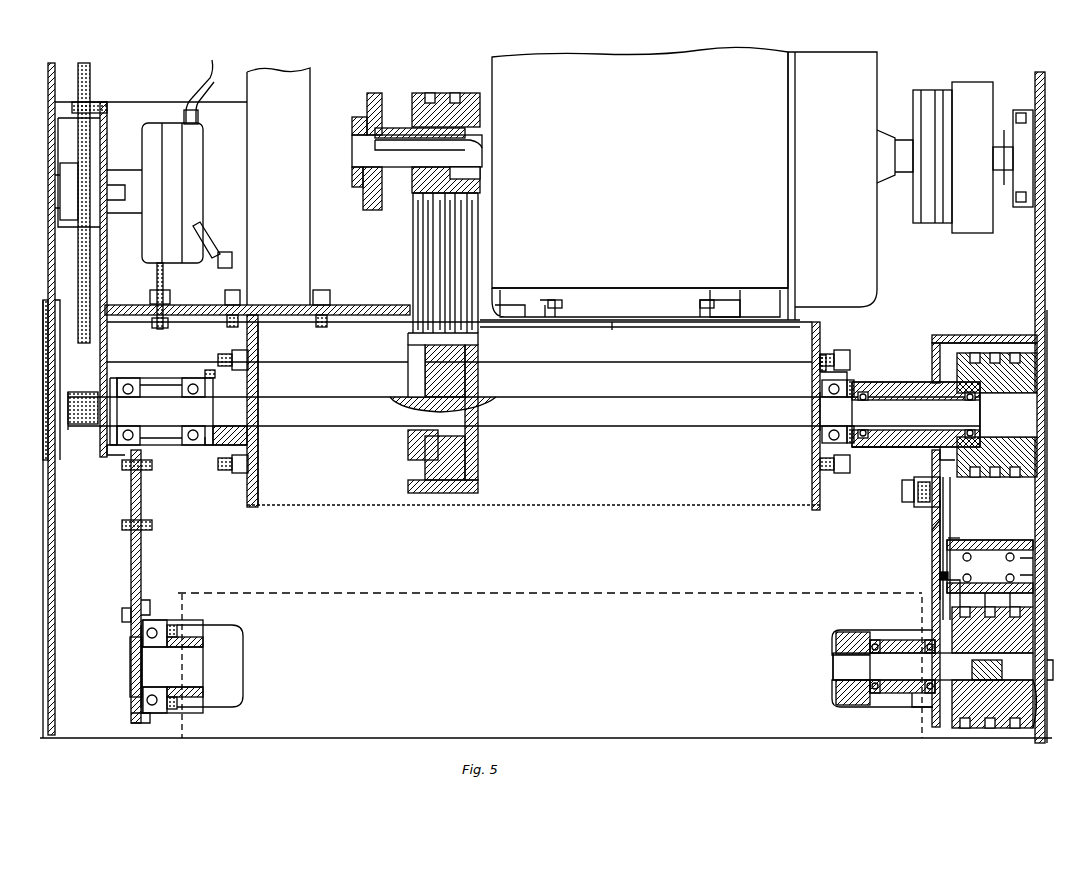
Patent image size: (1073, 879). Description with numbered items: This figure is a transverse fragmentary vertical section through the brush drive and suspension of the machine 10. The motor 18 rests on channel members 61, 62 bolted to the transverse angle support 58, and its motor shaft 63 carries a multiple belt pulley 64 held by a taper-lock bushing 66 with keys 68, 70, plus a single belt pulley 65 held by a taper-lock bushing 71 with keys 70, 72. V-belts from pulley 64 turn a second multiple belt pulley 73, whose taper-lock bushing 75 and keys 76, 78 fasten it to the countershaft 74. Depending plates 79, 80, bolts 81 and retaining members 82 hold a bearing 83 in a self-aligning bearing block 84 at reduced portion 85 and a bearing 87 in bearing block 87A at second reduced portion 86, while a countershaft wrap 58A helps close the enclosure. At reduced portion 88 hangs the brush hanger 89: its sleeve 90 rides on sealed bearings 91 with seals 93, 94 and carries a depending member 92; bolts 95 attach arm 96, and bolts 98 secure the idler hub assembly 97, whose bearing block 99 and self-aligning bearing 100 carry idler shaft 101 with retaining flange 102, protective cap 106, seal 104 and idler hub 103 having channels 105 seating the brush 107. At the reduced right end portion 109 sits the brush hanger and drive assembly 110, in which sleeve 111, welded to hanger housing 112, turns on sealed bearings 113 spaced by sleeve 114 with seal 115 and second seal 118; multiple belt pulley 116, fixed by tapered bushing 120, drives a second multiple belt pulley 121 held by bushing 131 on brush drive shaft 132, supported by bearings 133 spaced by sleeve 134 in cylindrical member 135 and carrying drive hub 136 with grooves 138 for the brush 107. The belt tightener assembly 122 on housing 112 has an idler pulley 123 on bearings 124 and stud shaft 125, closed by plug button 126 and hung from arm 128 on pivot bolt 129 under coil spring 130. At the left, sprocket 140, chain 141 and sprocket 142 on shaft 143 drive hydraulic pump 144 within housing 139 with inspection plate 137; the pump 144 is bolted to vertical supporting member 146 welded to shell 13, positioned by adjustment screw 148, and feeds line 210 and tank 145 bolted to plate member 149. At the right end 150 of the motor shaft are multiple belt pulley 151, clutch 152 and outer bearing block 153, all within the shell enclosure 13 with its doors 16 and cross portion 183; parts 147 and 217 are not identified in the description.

The machine 10 is at (607, 50).
The supporting shell enclosure 13 is at (48, 100).
The doors 16 is at (46, 528).
The motor 18 is at (684, 183).
The transverse angle support 58 is at (610, 352).
The transverse countershaft wrap 58A is at (510, 508).
The channel member 61 is at (535, 305).
The channel member 62 is at (740, 320).
The motor shaft 63 is at (380, 154).
The multiple belt pulley 64 is at (482, 104).
The single belt pulley 65 is at (370, 98).
The taper-lock bushing 66 is at (412, 180).
The key 68 is at (455, 176).
The key 70 is at (402, 134).
The taper-lock bushing 71 is at (356, 122).
The key 72 is at (366, 196).
The second multiple belt pulley 73 is at (478, 488).
The countershaft 74 is at (563, 420).
The taper-lock bushing 75 is at (408, 444).
The key 76 is at (465, 452).
The key 78 is at (470, 397).
The depending plate 79 is at (258, 490).
The depending plate 80 is at (812, 492).
The bolts 81 is at (250, 470).
The retaining member 82 is at (258, 386).
The bearing 83 is at (250, 444).
The self-aligning bearing block 84 is at (218, 448).
The reduced portion 85 is at (236, 410).
The second reduced portion 86 is at (830, 410).
The bearing 87 is at (822, 438).
The bearing block 87A is at (820, 450).
The reduced portion 88 is at (160, 437).
The brush hanger 89 is at (128, 592).
The sleeve 90 is at (117, 450).
The sealed bearings 91 is at (188, 378).
The depending member 92 is at (142, 510).
The seal 93 is at (115, 382).
The seal 94 is at (210, 372).
The bolts 95 is at (124, 466).
The arm 96 is at (130, 600).
The idler hub assembly 97 is at (243, 626).
The bolts 98 is at (122, 620).
The bearing block 99 is at (138, 725).
The self-aligning bearing 100 is at (165, 620).
The idler shaft 101 is at (190, 672).
The integral retaining flange 102 is at (138, 680).
The idler hub 103 is at (243, 650).
The seal 104 is at (172, 628).
The channels 105 is at (215, 625).
The protective cap 106 is at (130, 670).
The brush 107 is at (432, 592).
The reduced right end portion 109 is at (916, 414).
The brush hanger and drive assembly 110 is at (926, 557).
The sleeve 111 is at (880, 449).
The hanger housing 112 is at (938, 528).
The sealed bearings 113 is at (863, 400).
The sleeve 114 is at (902, 486).
The seal 115 is at (850, 378).
The multiple belt pulley 116 is at (1010, 330).
The second seal 118 is at (968, 328).
The tapered bushing 120 is at (990, 350).
The second multiple belt pulley 121 is at (1000, 732).
The belt tightener assembly 122 is at (940, 576).
The idler pulley 123 is at (940, 540).
The bearings 124 is at (990, 566).
The stud shaft 125 is at (945, 585).
The plug button 126 is at (1033, 566).
The arm 128 is at (938, 515).
The pivot bolt 129 is at (914, 492).
The coil spring 130 is at (932, 462).
The bushing 131 is at (1036, 732).
The brush drive shaft 132 is at (980, 730).
The bearings 133 is at (910, 680).
The sleeve 134 is at (915, 705).
The cylindrical member 135 is at (910, 640).
The drive hub 136 is at (835, 688).
The inspection plate 137 is at (43, 430).
The grooves 138 is at (846, 630).
The housing 139 is at (50, 272).
The sprocket 140 is at (74, 424).
The chain 141 is at (100, 330).
The sprocket 142 is at (70, 165).
The shaft 143 is at (60, 182).
The hydraulic pump 144 is at (203, 146).
The hydraulic supply tank 145 is at (278, 186).
The vertical supporting member 146 is at (152, 112).
The bolt 147 is at (326, 296).
The adjustment screw 148 is at (155, 292).
The plate member 149 is at (328, 312).
The right end of motor shaft 150 is at (905, 140).
The multiple belt pulley 151 is at (933, 98).
The clutch 152 is at (980, 95).
The outer bearing block 153 is at (1015, 140).
The cross portion 183 is at (645, 322).
The line 210 is at (212, 68).
The lever 217 is at (205, 234).